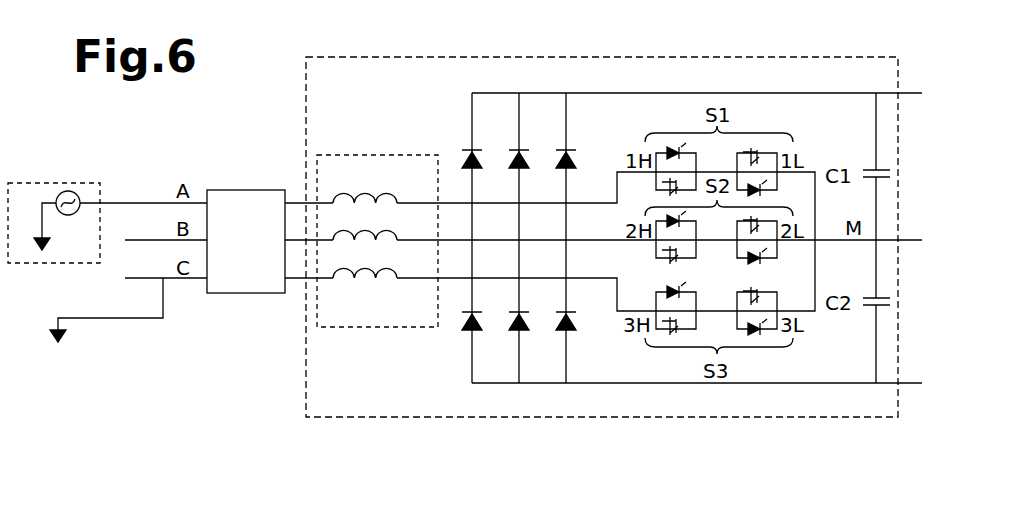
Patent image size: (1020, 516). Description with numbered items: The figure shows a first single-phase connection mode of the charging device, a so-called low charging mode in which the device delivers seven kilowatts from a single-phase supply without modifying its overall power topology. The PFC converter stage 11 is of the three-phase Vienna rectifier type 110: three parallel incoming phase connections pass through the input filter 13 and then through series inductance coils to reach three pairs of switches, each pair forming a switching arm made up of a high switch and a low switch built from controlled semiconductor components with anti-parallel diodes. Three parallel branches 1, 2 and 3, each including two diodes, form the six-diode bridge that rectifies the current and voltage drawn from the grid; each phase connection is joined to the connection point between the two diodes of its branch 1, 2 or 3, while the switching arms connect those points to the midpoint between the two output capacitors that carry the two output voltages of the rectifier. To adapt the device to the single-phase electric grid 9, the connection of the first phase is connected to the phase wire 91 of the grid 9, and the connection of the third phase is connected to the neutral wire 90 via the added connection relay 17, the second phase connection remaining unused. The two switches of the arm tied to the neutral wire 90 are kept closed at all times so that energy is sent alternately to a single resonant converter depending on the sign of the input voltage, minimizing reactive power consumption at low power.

The first branch 1 is at (472, 372).
The second branch 2 is at (519, 368).
The third branch 3 is at (566, 368).
The single-phase electric grid 9 is at (64, 208).
The PFC converter stage 11 is at (340, 58).
The input filter 13 is at (263, 252).
The connection relay 17 is at (107, 318).
The neutral wire 90 is at (42, 205).
The phase wire 91 is at (85, 200).
The three-phase Vienna rectifier 110 is at (304, 367).